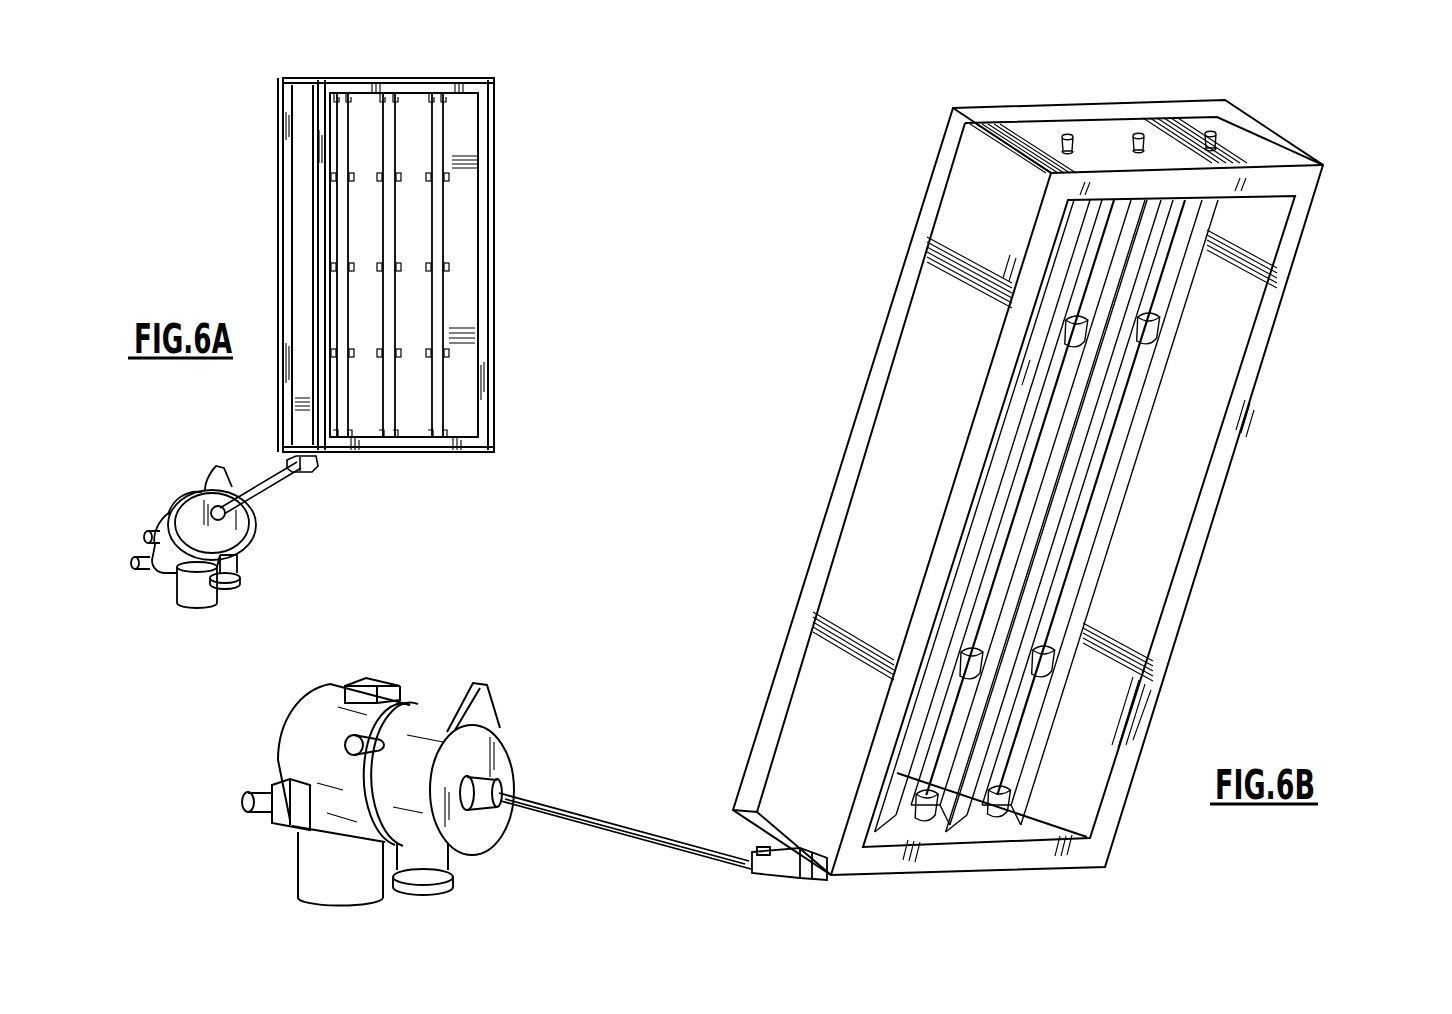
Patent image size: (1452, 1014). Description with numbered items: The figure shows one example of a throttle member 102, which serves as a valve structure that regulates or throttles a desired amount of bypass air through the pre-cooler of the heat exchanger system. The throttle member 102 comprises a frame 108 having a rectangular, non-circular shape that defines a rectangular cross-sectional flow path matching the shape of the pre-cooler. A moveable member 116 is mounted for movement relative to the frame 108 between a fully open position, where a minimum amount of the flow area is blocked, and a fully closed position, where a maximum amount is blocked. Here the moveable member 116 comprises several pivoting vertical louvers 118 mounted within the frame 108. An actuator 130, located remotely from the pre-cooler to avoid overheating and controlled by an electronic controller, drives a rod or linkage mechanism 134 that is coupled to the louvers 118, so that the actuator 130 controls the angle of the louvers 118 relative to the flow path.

In FIG. 6A, the throttle member 102 is at (560, 110).
In FIG. 6B, the throttle member 102 is at (1368, 186).
In FIG. 6A, the frame 108 is at (483, 300).
In FIG. 6B, the frame 108 is at (1240, 150).
In FIG. 6A, the moveable member 116 is at (326, 185).
In FIG. 6B, the moveable member 116 is at (1165, 501).
In FIG. 6A, the louvers 118 is at (437, 127).
In FIG. 6B, the louvers 118 is at (1185, 262).
In FIG. 6A, the actuator 130 is at (168, 522).
In FIG. 6B, the actuator 130 is at (310, 742).
In FIG. 6A, the rod or linkage mechanism 134 is at (268, 492).
In FIG. 6B, the rod or linkage mechanism 134 is at (590, 820).